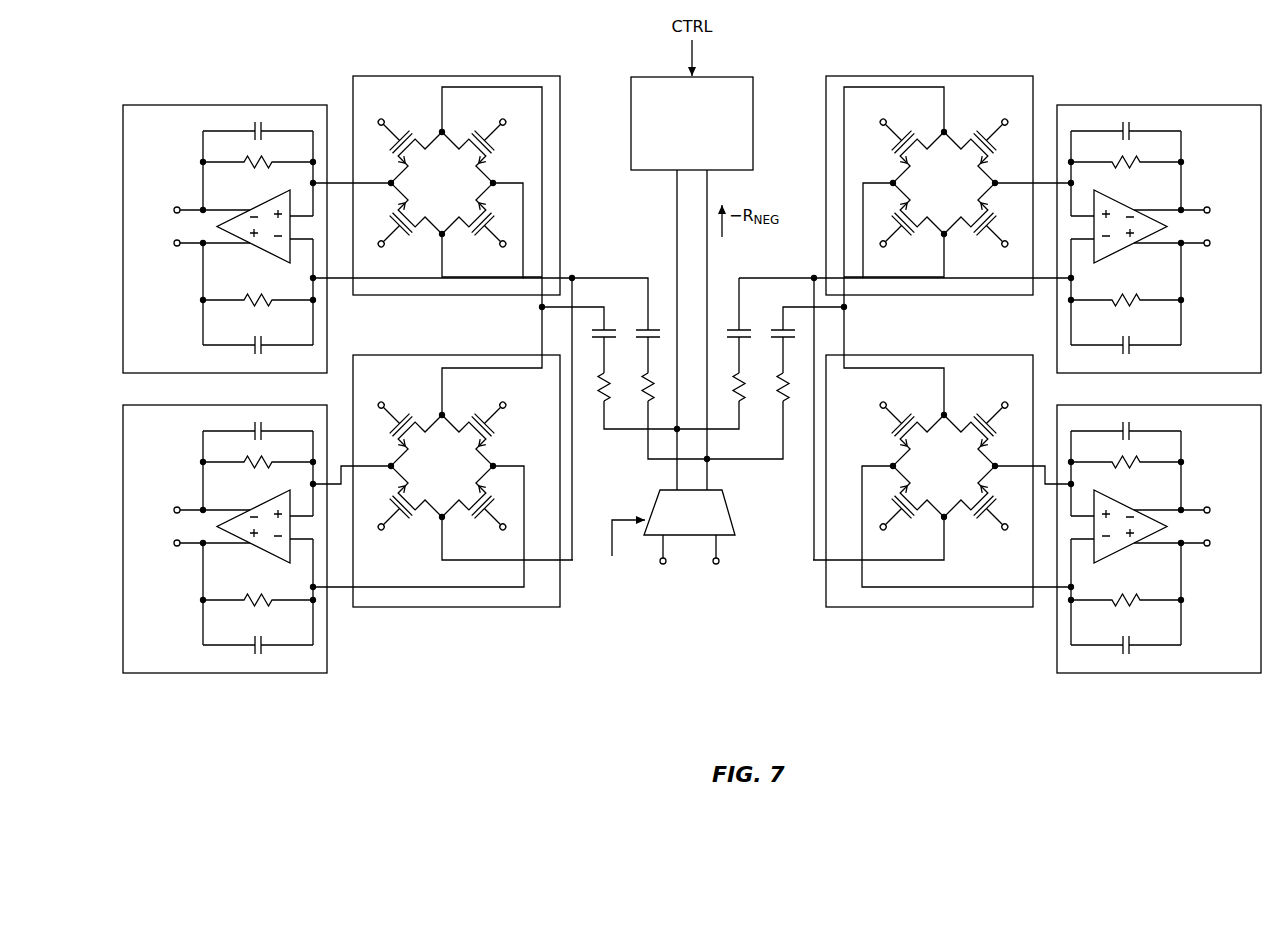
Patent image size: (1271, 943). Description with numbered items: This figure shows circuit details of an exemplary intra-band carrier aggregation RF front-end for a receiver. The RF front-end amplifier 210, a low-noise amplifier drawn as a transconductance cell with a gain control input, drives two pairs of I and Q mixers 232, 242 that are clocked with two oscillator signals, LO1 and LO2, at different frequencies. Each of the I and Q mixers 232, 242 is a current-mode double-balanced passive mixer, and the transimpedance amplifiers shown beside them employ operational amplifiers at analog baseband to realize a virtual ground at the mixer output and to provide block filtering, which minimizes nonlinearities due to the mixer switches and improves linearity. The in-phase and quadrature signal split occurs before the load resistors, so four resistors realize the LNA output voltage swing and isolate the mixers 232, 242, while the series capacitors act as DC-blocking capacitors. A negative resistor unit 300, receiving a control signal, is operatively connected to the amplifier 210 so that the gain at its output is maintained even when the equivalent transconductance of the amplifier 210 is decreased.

The I mixer 232 is at (287, 41).
The Q mixer 242 is at (370, 709).
The negative resistor unit 300 is at (692, 123).
The RF front-end amplifier 210 is at (729, 511).